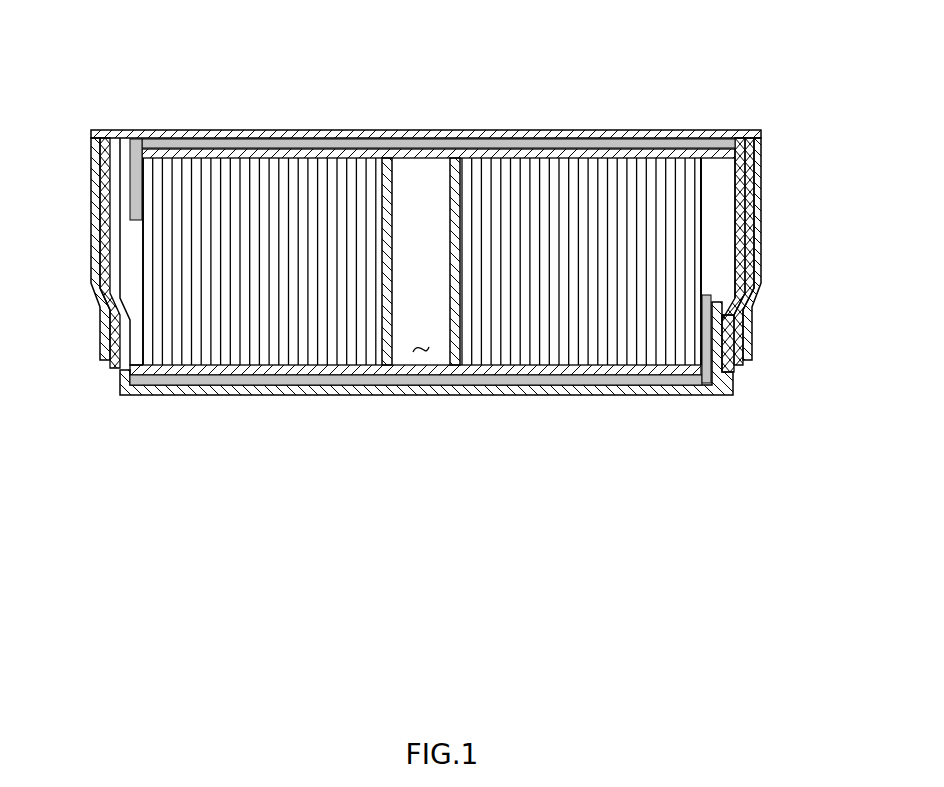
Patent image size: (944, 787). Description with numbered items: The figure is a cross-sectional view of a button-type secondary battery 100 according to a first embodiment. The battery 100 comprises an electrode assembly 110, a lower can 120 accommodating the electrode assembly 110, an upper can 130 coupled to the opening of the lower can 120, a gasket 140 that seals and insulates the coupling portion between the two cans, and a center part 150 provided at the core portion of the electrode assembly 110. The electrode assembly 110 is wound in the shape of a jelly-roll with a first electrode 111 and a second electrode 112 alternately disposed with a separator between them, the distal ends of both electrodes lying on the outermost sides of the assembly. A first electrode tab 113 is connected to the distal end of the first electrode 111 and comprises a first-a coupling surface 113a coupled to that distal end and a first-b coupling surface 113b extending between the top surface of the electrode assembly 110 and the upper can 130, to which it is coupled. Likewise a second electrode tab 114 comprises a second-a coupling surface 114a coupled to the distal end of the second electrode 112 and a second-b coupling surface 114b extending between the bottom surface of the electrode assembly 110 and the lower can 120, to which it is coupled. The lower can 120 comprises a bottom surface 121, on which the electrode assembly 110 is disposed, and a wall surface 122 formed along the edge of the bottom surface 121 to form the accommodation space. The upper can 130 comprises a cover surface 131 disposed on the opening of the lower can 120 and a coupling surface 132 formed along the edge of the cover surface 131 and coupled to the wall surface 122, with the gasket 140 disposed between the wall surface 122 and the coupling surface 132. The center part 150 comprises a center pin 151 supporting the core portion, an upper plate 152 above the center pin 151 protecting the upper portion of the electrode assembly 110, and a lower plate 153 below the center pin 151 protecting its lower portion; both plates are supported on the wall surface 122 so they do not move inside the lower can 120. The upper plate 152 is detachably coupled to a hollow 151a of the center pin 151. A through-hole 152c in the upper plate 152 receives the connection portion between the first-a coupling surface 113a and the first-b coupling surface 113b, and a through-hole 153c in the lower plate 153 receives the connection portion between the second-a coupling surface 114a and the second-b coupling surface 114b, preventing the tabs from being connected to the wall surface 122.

The button-type secondary battery 100 is at (660, 77).
The electrode assembly 110 is at (673, 272).
The first electrode 111 is at (127, 335).
The second electrode 112 is at (703, 232).
The first electrode tab 113 is at (230, 75).
The first-a coupling surface 113a is at (138, 190).
The first-b coupling surface 113b is at (305, 150).
The second electrode tab 114 is at (643, 455).
The second-a coupling surface 114a is at (706, 333).
The second-b coupling surface 114b is at (555, 382).
The lower can 120 is at (848, 330).
The bottom surface 121 is at (712, 393).
The wall surface 122 is at (737, 340).
The upper can 130 is at (848, 118).
The cover surface 131 is at (715, 132).
The coupling surface 132 is at (758, 166).
The gasket 140 is at (103, 198).
The center part 150 is at (243, 572).
The center pin 151 is at (453, 184).
The hollow 151a is at (420, 353).
The upper plate 152 is at (525, 150).
The through-hole 152c is at (136, 140).
The lower plate 153 is at (333, 372).
The through-hole 153c is at (707, 375).